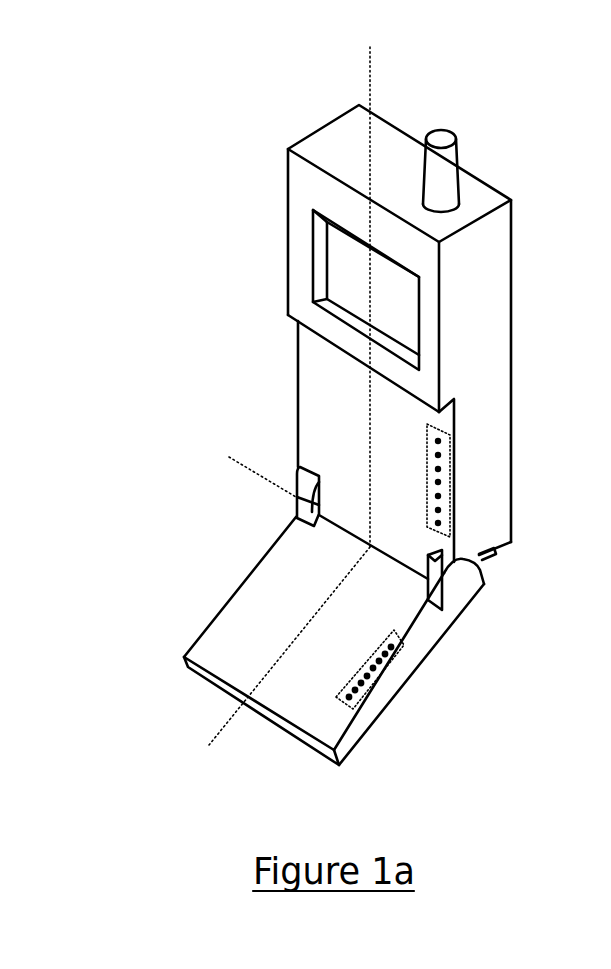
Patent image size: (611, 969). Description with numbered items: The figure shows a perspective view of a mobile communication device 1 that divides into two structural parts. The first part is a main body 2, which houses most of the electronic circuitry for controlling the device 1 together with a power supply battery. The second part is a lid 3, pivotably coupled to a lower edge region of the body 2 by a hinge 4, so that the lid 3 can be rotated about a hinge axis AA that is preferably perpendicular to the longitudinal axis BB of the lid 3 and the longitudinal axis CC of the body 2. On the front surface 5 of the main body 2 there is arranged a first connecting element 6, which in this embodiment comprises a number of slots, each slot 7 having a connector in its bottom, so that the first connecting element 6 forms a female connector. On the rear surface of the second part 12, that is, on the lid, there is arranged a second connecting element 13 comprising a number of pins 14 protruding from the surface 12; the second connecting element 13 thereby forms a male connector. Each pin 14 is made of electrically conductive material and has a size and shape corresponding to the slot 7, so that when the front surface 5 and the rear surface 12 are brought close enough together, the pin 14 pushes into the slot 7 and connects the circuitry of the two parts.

The mobile communication device 1 is at (544, 111).
The main body 2 is at (489, 336).
The lid 3 is at (395, 680).
The hinge 4 is at (461, 580).
The front surface 5 is at (444, 421).
The first connecting element 6 is at (451, 494).
The slot 7 is at (445, 458).
The rear surface of the second part 12 is at (267, 582).
The second connecting element 13 is at (367, 689).
The pin 14 is at (395, 640).